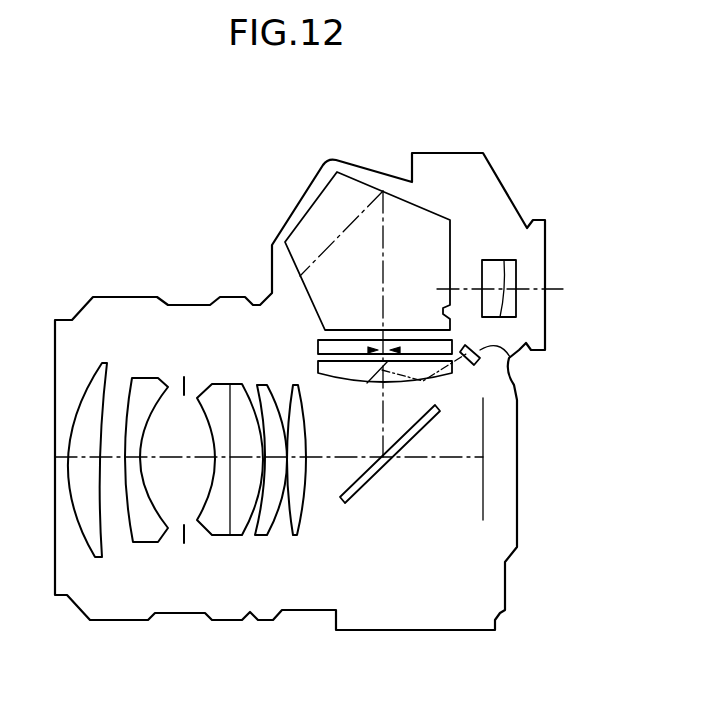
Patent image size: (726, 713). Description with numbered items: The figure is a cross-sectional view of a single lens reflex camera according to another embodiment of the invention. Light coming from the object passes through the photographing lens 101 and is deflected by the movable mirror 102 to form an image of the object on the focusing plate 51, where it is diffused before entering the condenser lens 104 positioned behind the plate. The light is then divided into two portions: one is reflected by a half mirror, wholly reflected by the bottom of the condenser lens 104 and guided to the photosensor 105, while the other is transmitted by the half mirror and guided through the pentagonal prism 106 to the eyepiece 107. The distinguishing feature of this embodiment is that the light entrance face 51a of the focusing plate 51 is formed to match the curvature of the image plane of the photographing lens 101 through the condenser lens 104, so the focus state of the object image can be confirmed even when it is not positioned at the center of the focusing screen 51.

The photographing lens 101 is at (132, 378).
The movable mirror 102 is at (373, 473).
The condenser lens 104 is at (318, 367).
The photosensor 105 is at (510, 360).
The pentagonal prism 106 is at (343, 185).
The eyepiece 107 is at (505, 268).
The focusing plate 51 is at (318, 344).
The light entrance face 51a is at (343, 362).